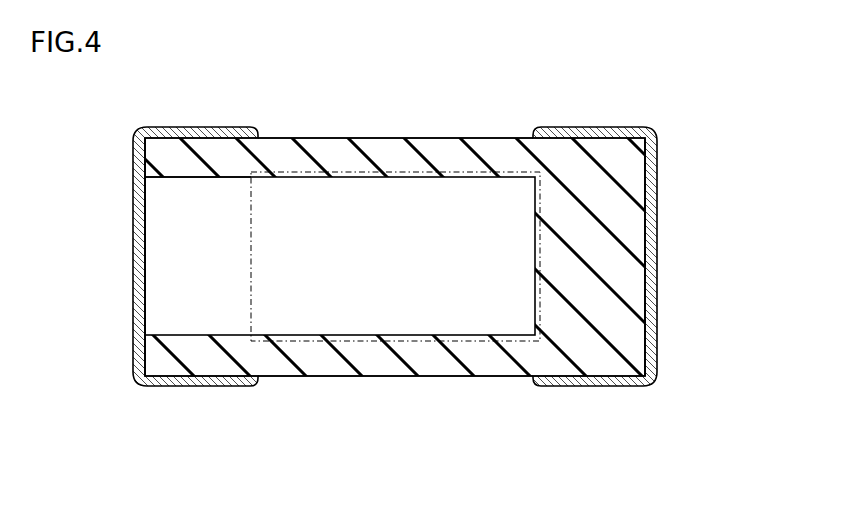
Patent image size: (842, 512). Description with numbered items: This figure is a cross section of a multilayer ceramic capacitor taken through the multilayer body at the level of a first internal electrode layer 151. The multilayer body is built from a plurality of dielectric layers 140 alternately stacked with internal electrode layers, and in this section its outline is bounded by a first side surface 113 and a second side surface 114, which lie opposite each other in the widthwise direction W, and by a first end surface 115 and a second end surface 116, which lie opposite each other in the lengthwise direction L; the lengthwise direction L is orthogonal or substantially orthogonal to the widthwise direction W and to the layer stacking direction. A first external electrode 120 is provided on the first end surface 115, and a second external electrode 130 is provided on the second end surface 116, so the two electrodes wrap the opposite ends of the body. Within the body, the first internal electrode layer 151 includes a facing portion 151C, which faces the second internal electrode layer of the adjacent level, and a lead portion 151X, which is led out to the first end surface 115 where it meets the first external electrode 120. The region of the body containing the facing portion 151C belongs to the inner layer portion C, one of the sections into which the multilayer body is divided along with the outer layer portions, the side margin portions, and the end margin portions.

The first side surface 113 is at (425, 377).
The second side surface 114 is at (471, 138).
The first end surface 115 is at (142, 172).
The second end surface 116 is at (648, 170).
The first external electrode 120 is at (140, 278).
The second external electrode 130 is at (647, 267).
The dielectric layer 140 is at (376, 165).
The first internal electrode layer 151 is at (423, 212).
The facing portion 151C is at (314, 175).
The lead portion 151X is at (211, 174).
The inner layer portion C is at (503, 172).
The widthwise direction W is at (760, 140).
The lengthwise direction L is at (655, 460).